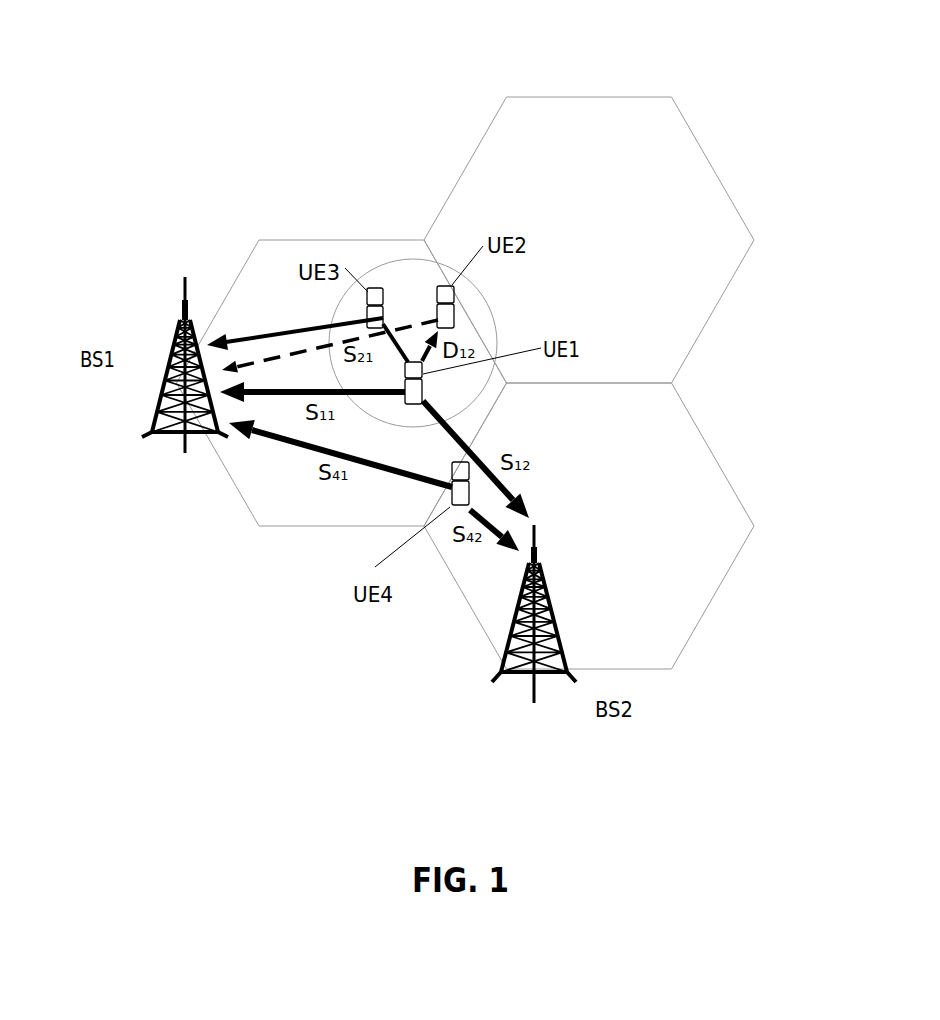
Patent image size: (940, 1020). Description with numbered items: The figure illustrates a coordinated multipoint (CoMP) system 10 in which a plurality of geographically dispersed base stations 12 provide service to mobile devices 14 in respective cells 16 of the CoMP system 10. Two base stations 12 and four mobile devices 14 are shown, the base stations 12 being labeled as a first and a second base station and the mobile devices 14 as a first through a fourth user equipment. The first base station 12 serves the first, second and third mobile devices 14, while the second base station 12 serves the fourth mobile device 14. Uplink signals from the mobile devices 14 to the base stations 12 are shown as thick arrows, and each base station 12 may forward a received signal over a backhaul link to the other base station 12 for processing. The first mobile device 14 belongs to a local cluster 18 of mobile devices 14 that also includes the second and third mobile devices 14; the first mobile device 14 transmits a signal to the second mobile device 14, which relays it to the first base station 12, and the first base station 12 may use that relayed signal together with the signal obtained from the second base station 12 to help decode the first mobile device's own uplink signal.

The coordinated multipoint (CoMP) system 10 is at (863, 72).
The base station 12 is at (143, 435).
The mobile device 14 is at (373, 288).
The cell 16 is at (553, 97).
The local cluster 18 is at (447, 265).